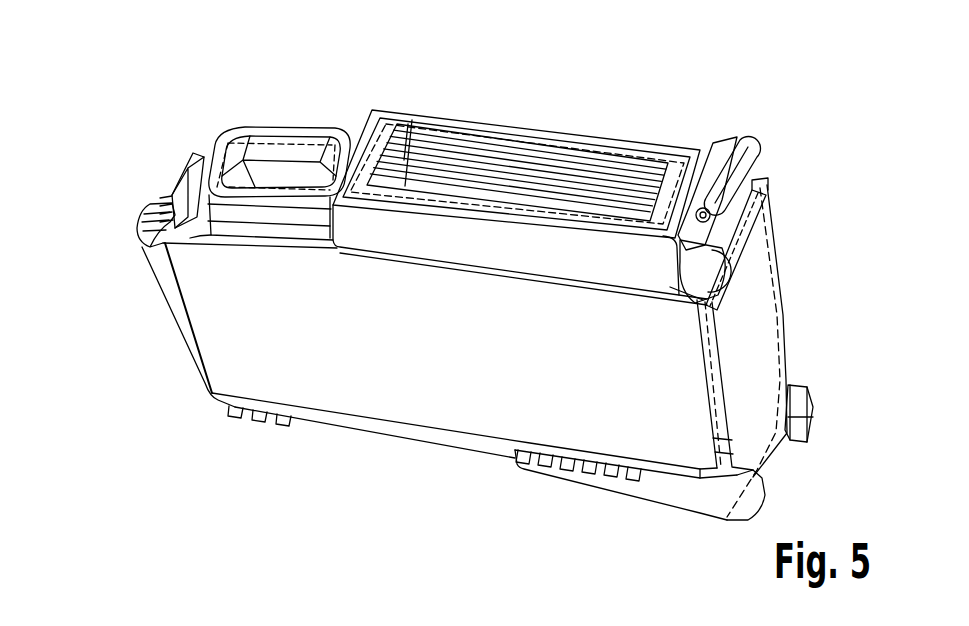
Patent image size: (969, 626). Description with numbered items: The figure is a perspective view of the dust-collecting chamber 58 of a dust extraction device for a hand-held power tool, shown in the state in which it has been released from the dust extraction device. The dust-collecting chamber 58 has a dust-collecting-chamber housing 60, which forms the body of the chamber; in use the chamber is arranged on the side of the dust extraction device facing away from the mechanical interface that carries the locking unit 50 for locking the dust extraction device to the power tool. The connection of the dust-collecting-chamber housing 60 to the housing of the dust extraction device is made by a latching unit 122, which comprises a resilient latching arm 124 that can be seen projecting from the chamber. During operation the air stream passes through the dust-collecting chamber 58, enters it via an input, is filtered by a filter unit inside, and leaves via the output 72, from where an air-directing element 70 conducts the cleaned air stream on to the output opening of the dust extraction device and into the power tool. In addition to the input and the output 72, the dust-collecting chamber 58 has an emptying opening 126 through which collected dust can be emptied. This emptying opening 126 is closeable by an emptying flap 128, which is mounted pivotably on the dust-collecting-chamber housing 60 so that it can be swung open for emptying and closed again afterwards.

The locking unit 50 is at (137, 180).
The dust-collecting chamber 58 is at (780, 110).
The dust-collecting-chamber housing 60 is at (400, 405).
The air-directing element 70 is at (264, 124).
The output 72 is at (578, 138).
The latching unit 122 is at (195, 131).
The resilient latching arm 124 is at (190, 168).
The emptying opening 126 is at (773, 260).
The emptying flap 128 is at (763, 345).